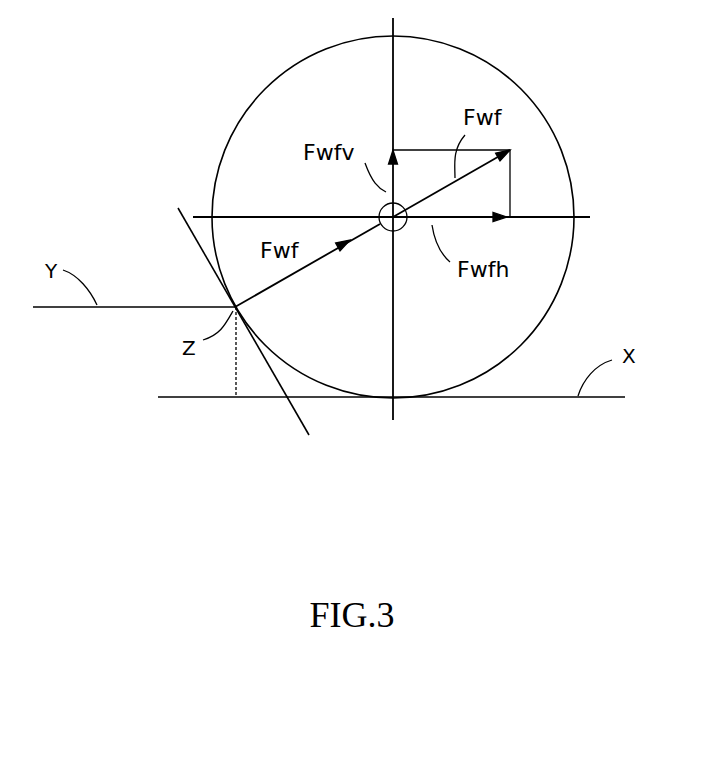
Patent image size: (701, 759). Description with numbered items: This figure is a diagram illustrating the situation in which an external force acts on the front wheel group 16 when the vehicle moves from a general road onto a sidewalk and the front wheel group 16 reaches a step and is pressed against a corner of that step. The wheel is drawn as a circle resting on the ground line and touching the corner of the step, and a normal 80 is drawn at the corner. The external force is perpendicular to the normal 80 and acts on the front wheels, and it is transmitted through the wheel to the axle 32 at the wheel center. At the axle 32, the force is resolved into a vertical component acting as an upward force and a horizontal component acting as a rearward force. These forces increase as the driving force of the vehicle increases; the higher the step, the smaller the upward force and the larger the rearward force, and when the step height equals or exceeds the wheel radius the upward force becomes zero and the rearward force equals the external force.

The front wheel group 16 is at (483, 62).
The axle 32 is at (382, 231).
The normal 80 is at (298, 420).